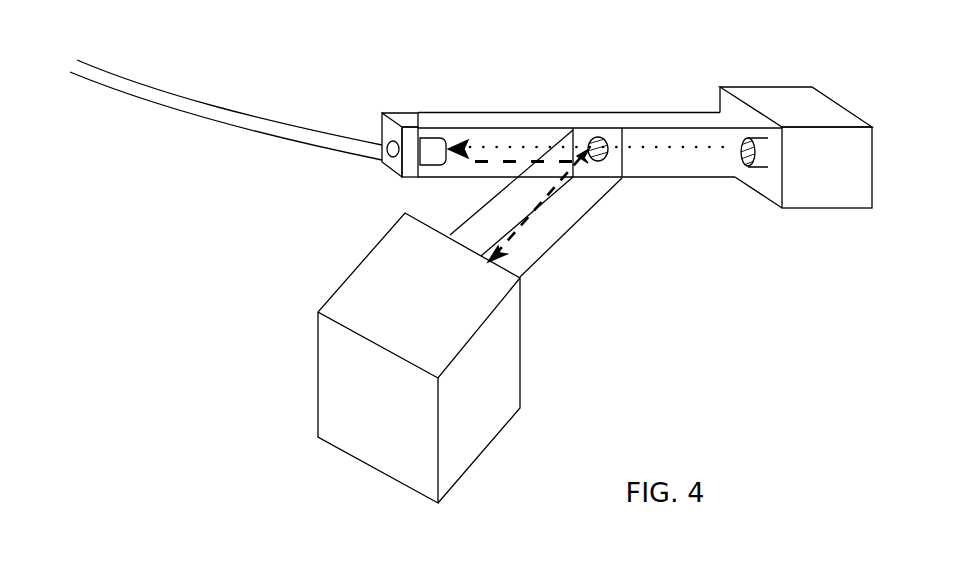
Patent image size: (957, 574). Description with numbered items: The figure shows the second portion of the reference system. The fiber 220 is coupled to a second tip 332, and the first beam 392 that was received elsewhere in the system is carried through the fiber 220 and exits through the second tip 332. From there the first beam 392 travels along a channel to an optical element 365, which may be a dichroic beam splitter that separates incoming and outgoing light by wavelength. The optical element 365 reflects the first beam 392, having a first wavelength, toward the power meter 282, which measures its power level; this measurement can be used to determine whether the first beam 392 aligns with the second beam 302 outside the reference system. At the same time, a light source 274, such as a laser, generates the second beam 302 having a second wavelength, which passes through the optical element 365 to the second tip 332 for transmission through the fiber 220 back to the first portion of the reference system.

The fiber 220 is at (220, 110).
The second tip 332 is at (393, 112).
The second beam 302 is at (673, 148).
The optical element 365 is at (597, 137).
The light source 274 is at (842, 200).
The first beam 392 is at (550, 203).
The power meter 282 is at (500, 365).